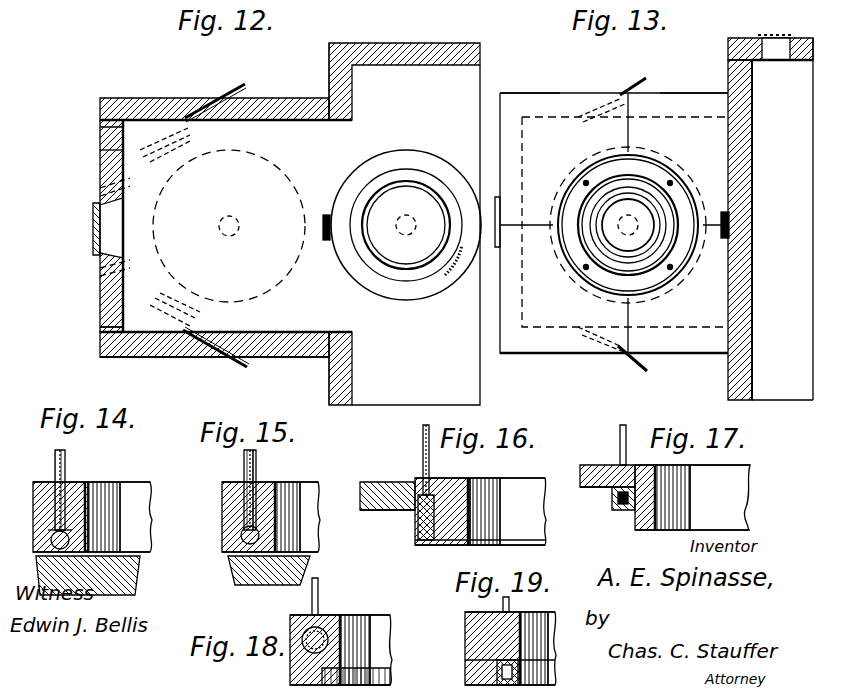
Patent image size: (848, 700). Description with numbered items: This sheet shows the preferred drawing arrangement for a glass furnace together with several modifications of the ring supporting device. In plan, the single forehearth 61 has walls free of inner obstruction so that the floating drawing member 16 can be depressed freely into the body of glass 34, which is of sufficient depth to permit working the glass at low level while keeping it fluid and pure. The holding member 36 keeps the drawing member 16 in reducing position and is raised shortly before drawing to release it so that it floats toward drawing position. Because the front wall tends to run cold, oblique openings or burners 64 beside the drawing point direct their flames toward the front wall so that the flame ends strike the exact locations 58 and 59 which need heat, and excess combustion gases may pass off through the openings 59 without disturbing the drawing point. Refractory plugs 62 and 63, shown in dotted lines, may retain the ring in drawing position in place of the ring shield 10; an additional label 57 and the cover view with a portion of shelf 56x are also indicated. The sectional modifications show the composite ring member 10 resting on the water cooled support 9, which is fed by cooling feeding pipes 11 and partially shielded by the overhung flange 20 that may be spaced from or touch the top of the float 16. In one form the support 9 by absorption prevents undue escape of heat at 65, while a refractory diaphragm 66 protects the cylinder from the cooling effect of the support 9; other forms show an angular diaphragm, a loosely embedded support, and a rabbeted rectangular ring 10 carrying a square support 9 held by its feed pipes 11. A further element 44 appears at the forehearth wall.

In FIG. 14, the water cooled support 9 is at (75, 535).
In FIG. 15, the water cooled support 9 is at (243, 530).
In FIG. 16, the water cooled support 9 is at (418, 548).
In FIG. 17, the water cooled support 9 is at (614, 508).
In FIG. 18, the water cooled support 9 is at (292, 655).
In FIG. 19, the water cooled support 9 is at (465, 676).
In FIG. 14, the composite ring member 10 is at (55, 480).
In FIG. 15, the composite ring member 10 is at (246, 482).
In FIG. 15, the cooling feeding pipes 11 is at (260, 468).
In FIG. 12, the floating drawing member 16 is at (426, 152).
In FIG. 13, the floating drawing member 16 is at (628, 225).
In FIG. 14, the overhung flange 20 is at (136, 560).
In FIG. 15, the overhung flange 20 is at (222, 537).
In FIG. 12, the body of glass 34 is at (262, 162).
In FIG. 12, the holding member 36 is at (325, 242).
In FIG. 13, the holding member 36 is at (729, 225).
In FIG. 12, the window 44 is at (96, 225).
In FIG. 13, the pin 56x is at (683, 100).
In FIG. 12, the step block 57 is at (328, 122).
In FIG. 12, the front wall location 58 is at (193, 123).
In FIG. 12, the openings 59 is at (100, 330).
In FIG. 12, the forehearth 61 is at (100, 155).
In FIG. 13, the forehearth 61 is at (538, 100).
In FIG. 12, the plug 62 is at (98, 185).
In FIG. 12, the plug 63 is at (98, 272).
In FIG. 12, the oblique burners 64 is at (202, 342).
In FIG. 16, the heat escape point 65 is at (415, 510).
In FIG. 16, the refractory diaphragm 66 is at (428, 482).